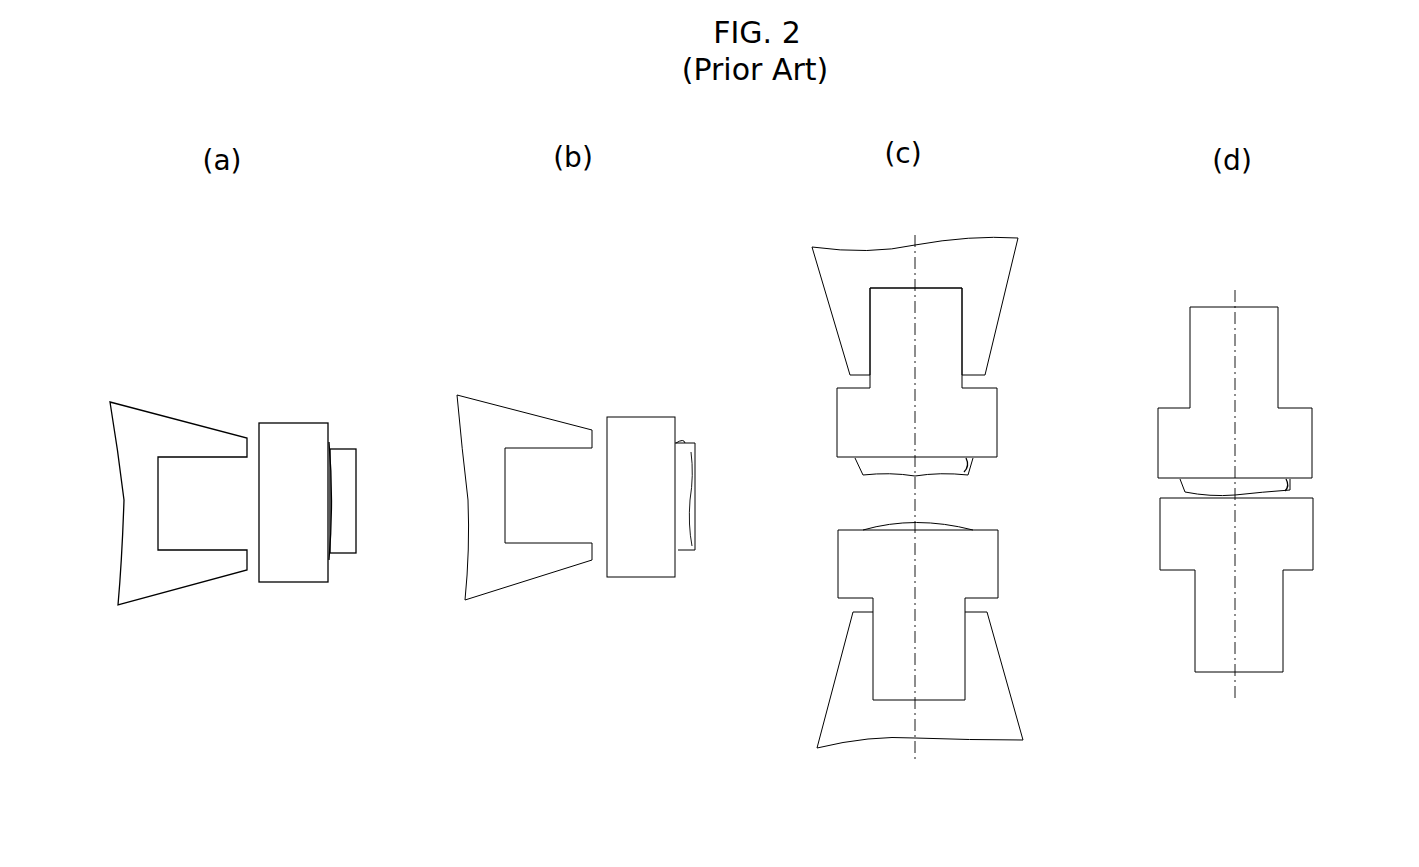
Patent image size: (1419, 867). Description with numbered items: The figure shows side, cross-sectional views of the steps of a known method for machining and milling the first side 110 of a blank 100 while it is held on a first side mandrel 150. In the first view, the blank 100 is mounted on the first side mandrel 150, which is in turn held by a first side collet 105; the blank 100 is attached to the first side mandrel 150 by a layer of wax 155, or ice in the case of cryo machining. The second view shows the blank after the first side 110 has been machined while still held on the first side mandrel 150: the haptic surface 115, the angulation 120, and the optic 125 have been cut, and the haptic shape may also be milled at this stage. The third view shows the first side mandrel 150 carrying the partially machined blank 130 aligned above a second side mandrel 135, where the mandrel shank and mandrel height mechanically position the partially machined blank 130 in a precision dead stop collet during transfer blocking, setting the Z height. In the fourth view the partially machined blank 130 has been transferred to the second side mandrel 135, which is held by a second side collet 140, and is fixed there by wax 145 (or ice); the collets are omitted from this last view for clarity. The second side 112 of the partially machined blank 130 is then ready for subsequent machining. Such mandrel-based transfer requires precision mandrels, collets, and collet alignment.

The blank 100 is at (348, 460).
The first side collet 105 is at (160, 432).
The first side 110 is at (358, 540).
The second side 112 is at (1263, 476).
The haptic surface 115 is at (693, 457).
The angulation 120 is at (695, 528).
The optic 125 is at (692, 500).
The partially machined blank 130 is at (686, 488).
The second side mandrel 135 is at (983, 567).
The second side collet 140 is at (985, 687).
The wax 145 is at (928, 524).
The first side mandrel 150 is at (280, 440).
The wax 155 is at (335, 557).